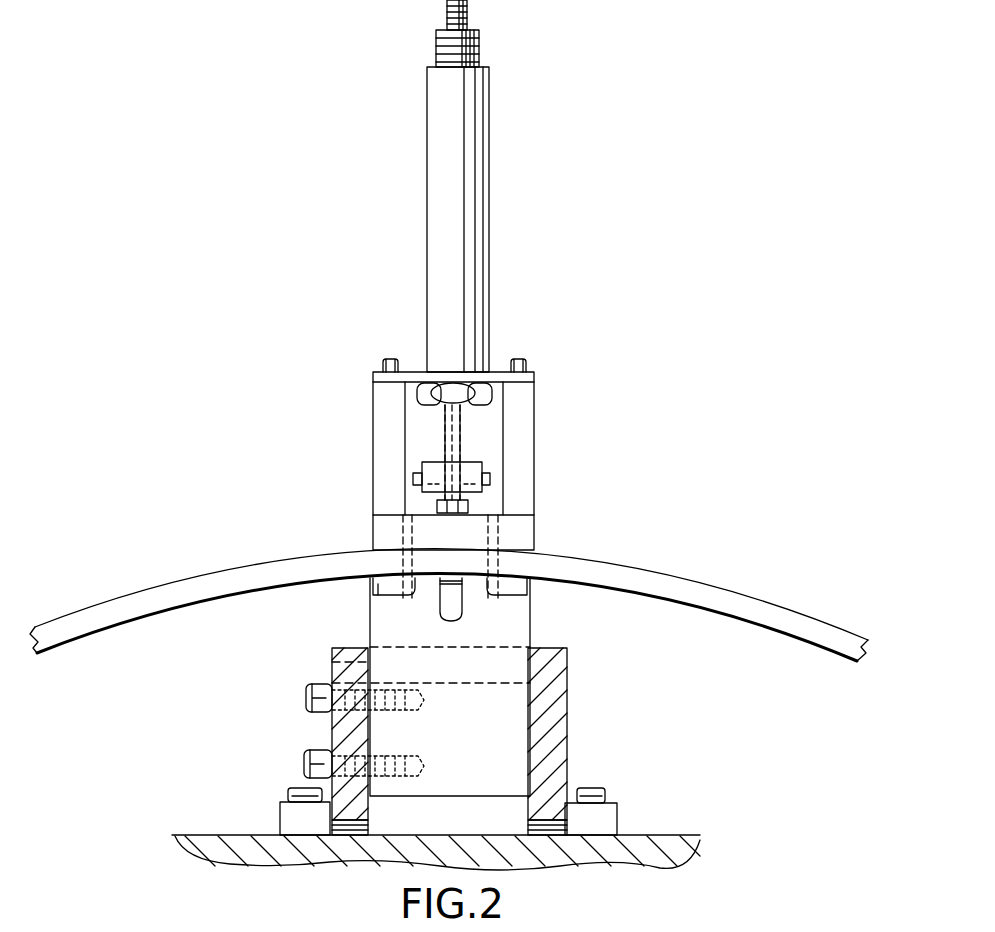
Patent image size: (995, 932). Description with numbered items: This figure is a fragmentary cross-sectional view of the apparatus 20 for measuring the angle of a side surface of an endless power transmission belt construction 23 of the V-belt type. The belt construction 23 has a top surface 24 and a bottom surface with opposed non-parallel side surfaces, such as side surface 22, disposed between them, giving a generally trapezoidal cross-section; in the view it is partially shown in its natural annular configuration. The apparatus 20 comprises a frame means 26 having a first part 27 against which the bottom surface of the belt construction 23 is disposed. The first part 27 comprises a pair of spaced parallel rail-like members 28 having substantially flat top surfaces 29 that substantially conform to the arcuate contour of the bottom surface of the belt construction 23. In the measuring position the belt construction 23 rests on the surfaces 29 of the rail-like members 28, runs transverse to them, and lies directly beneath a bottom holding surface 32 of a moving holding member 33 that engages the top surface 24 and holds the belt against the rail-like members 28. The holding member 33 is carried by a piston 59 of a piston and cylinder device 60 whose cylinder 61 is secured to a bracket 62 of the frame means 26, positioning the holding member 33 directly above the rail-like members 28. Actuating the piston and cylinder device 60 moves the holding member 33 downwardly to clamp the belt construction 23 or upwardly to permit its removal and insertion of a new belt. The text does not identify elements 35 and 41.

The apparatus 20 is at (752, 419).
The side surface 22 is at (728, 595).
The belt construction 23 is at (806, 607).
The top surface 24 is at (632, 563).
The frame means 26 is at (560, 754).
The first part 27 is at (520, 626).
The rail-like members 28 is at (428, 583).
The top surfaces 29 is at (423, 578).
The bottom holding surface 32 is at (376, 590).
The holding member 33 is at (516, 522).
The block 35 is at (478, 470).
The side projection 41 is at (413, 478).
The piston 59 is at (462, 440).
The piston and cylinder device 60 is at (508, 240).
The cylinder 61 is at (486, 284).
The bracket 62 is at (420, 368).